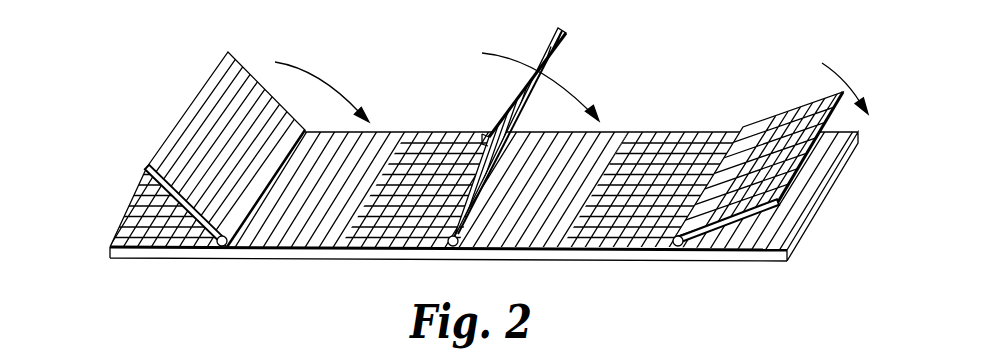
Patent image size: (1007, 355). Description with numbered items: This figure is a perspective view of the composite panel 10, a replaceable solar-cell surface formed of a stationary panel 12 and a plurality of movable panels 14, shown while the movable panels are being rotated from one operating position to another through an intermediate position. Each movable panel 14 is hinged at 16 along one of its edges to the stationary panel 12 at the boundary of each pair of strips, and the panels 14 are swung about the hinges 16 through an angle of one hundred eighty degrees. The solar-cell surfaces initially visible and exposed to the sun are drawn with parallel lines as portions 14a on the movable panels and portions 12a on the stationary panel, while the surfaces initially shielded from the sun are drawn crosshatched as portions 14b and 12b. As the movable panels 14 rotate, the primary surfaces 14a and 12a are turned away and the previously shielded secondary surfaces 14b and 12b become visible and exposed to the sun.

The composite panel 10 is at (496, 163).
The stationary panel 12 is at (160, 252).
The primary surface portions of the stationary panel 12a is at (282, 228).
The shielded portions of the stationary panel 12b is at (449, 148).
The movable panels 14 is at (204, 84).
The primary surface portions of the movable panels 14a is at (248, 95).
The secondary surface portions of the movable panels 14b is at (787, 123).
The hinges 16 is at (226, 250).